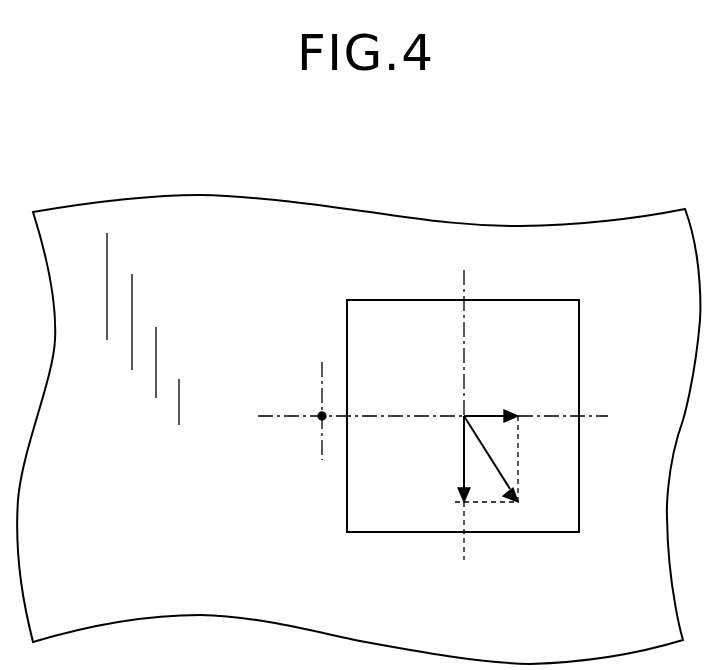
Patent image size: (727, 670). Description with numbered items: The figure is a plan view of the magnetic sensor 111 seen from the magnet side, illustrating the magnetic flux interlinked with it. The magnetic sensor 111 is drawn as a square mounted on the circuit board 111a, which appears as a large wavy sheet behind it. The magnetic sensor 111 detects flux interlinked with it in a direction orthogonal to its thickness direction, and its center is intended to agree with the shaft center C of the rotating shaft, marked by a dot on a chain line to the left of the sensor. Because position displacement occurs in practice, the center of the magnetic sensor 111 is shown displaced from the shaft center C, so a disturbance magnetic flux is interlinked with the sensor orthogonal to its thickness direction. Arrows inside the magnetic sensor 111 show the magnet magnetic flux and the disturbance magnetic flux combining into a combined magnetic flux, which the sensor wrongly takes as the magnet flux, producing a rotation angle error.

The circuit board 111a is at (185, 196).
The magnetic sensor 111 is at (500, 300).
The shaft center C is at (322, 416).